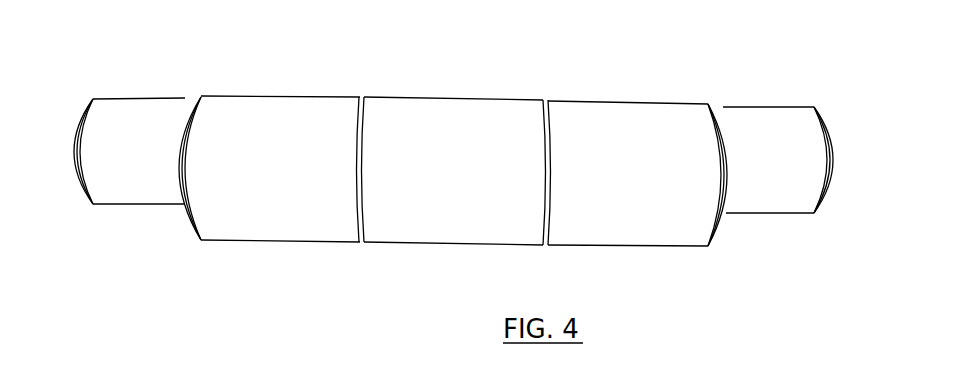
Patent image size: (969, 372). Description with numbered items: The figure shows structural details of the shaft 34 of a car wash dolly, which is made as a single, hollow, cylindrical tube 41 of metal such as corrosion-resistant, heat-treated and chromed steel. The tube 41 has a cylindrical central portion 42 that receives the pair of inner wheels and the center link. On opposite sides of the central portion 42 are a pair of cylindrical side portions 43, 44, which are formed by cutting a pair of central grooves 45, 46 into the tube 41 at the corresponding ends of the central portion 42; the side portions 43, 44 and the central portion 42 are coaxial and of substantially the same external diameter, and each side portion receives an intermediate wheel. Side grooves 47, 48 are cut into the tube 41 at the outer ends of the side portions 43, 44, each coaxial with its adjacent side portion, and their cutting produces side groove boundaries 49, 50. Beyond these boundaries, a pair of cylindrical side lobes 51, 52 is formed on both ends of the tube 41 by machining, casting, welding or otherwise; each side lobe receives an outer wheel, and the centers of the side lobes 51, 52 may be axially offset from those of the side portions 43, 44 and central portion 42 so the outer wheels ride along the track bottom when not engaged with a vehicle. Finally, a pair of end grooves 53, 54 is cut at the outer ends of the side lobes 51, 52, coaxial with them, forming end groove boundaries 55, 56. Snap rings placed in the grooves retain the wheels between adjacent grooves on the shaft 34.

The shaft 34 is at (192, 366).
The tube 41 is at (466, 178).
The central portion 42 is at (440, 108).
The side portion 43 is at (267, 110).
The side portion 44 is at (630, 105).
The central groove 45 is at (360, 110).
The central groove 46 is at (544, 105).
The side groove 47 is at (200, 238).
The side groove 48 is at (707, 246).
The side groove boundary 49 is at (192, 240).
The side groove boundary 50 is at (717, 234).
The side lobe 51 is at (133, 110).
The side lobe 52 is at (755, 108).
The end groove 53 is at (93, 205).
The end groove 54 is at (814, 214).
The end groove boundary 55 is at (87, 205).
The end groove boundary 56 is at (822, 204).